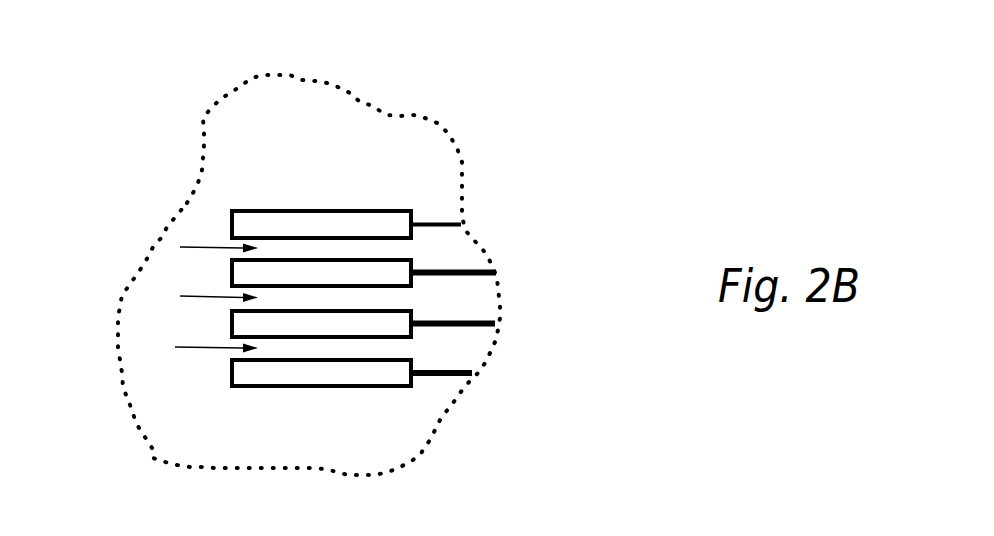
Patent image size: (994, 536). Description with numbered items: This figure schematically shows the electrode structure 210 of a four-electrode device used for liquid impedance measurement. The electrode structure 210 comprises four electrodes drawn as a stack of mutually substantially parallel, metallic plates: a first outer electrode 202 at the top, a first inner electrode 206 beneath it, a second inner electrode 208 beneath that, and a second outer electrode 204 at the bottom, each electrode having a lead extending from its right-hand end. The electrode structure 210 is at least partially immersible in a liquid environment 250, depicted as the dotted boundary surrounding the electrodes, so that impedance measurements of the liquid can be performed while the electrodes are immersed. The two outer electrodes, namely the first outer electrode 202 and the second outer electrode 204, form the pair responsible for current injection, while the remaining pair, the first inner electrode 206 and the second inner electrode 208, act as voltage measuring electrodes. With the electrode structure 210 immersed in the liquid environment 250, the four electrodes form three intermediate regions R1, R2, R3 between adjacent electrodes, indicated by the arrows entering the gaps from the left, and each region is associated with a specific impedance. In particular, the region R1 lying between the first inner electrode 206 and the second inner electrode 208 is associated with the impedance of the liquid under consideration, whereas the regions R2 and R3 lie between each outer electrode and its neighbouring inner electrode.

The liquid environment 250 is at (371, 119).
The first outer electrode 202 is at (388, 208).
The first inner electrode 206 is at (388, 258).
The second inner electrode 208 is at (388, 309).
The second outer electrode 204 is at (388, 359).
The electrode structure 210 is at (291, 407).
The intermediate region R1 is at (180, 296).
The intermediate region R2 is at (180, 247).
The intermediate region R3 is at (175, 347).